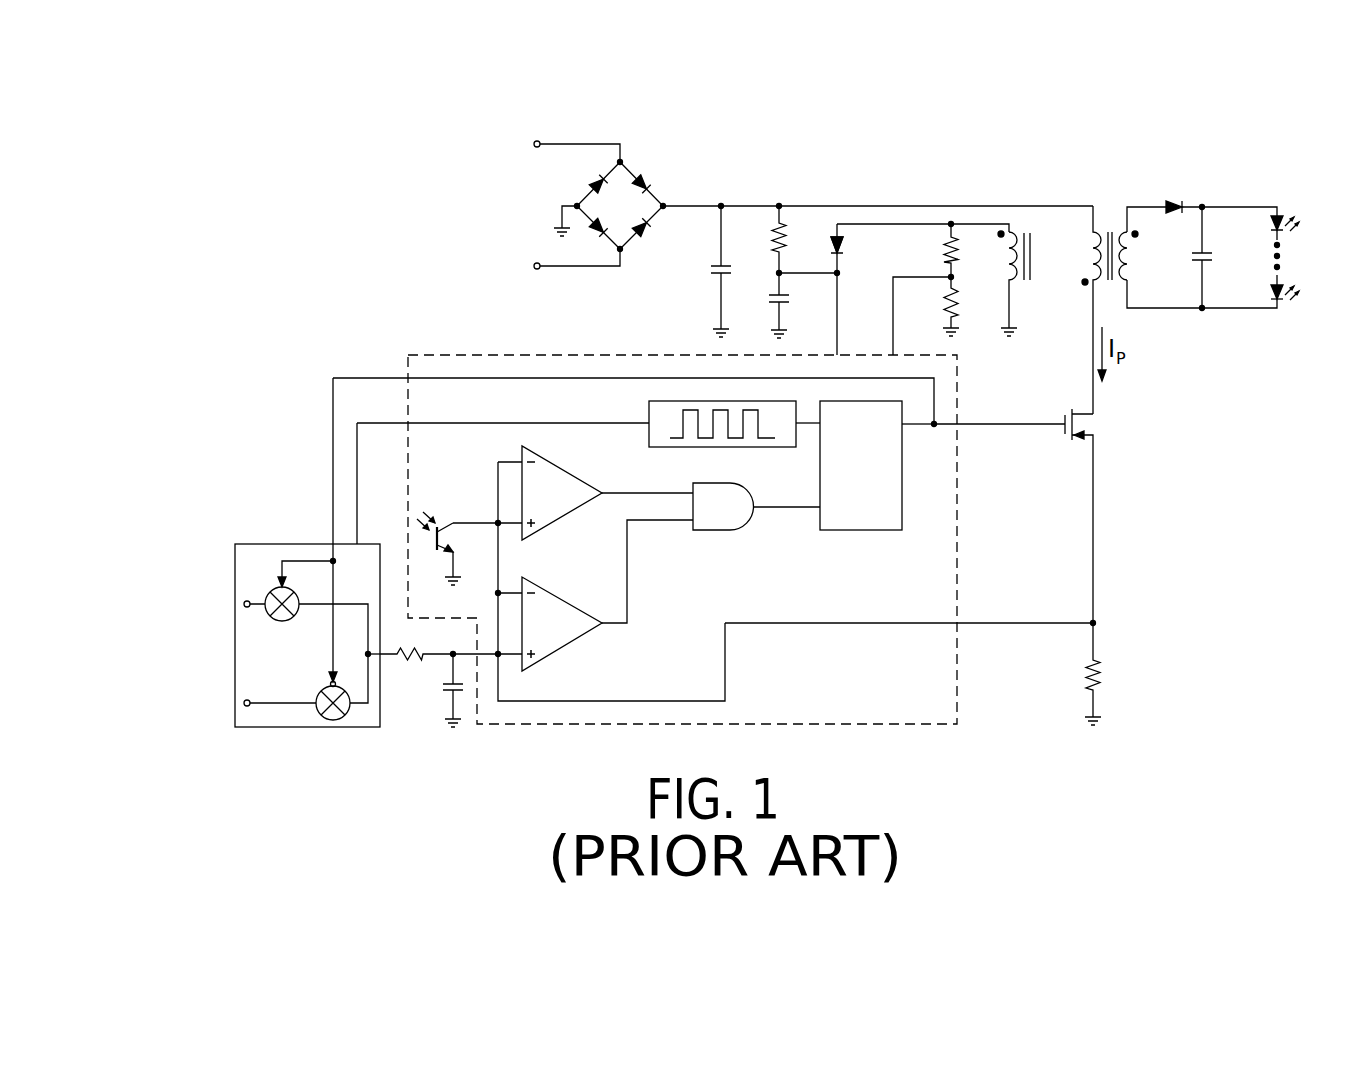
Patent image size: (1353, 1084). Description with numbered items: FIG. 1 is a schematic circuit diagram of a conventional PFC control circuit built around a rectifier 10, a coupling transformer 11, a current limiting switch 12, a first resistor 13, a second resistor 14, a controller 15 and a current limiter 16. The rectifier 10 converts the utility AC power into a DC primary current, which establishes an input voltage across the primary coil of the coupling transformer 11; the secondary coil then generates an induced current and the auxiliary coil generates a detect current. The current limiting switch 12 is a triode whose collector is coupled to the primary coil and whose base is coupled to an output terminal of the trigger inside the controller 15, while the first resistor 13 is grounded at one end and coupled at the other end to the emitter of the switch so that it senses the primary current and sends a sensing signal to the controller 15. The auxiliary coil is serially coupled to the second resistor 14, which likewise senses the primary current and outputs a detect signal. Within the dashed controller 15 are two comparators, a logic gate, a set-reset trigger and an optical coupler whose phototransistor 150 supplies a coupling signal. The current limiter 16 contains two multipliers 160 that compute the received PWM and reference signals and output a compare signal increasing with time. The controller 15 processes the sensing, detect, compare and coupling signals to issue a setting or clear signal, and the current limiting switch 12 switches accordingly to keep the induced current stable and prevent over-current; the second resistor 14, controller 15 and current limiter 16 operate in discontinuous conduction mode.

The rectifier 10 is at (652, 192).
The coupling transformer 11 is at (1106, 210).
The current limiting switch 12 is at (1092, 421).
The first resistor 13 is at (1096, 660).
The second resistor 14 is at (946, 293).
The controller 15 is at (609, 541).
The phototransistor 150 is at (437, 521).
The current limiter 16 is at (266, 552).
The light emitting element 160 is at (280, 618).